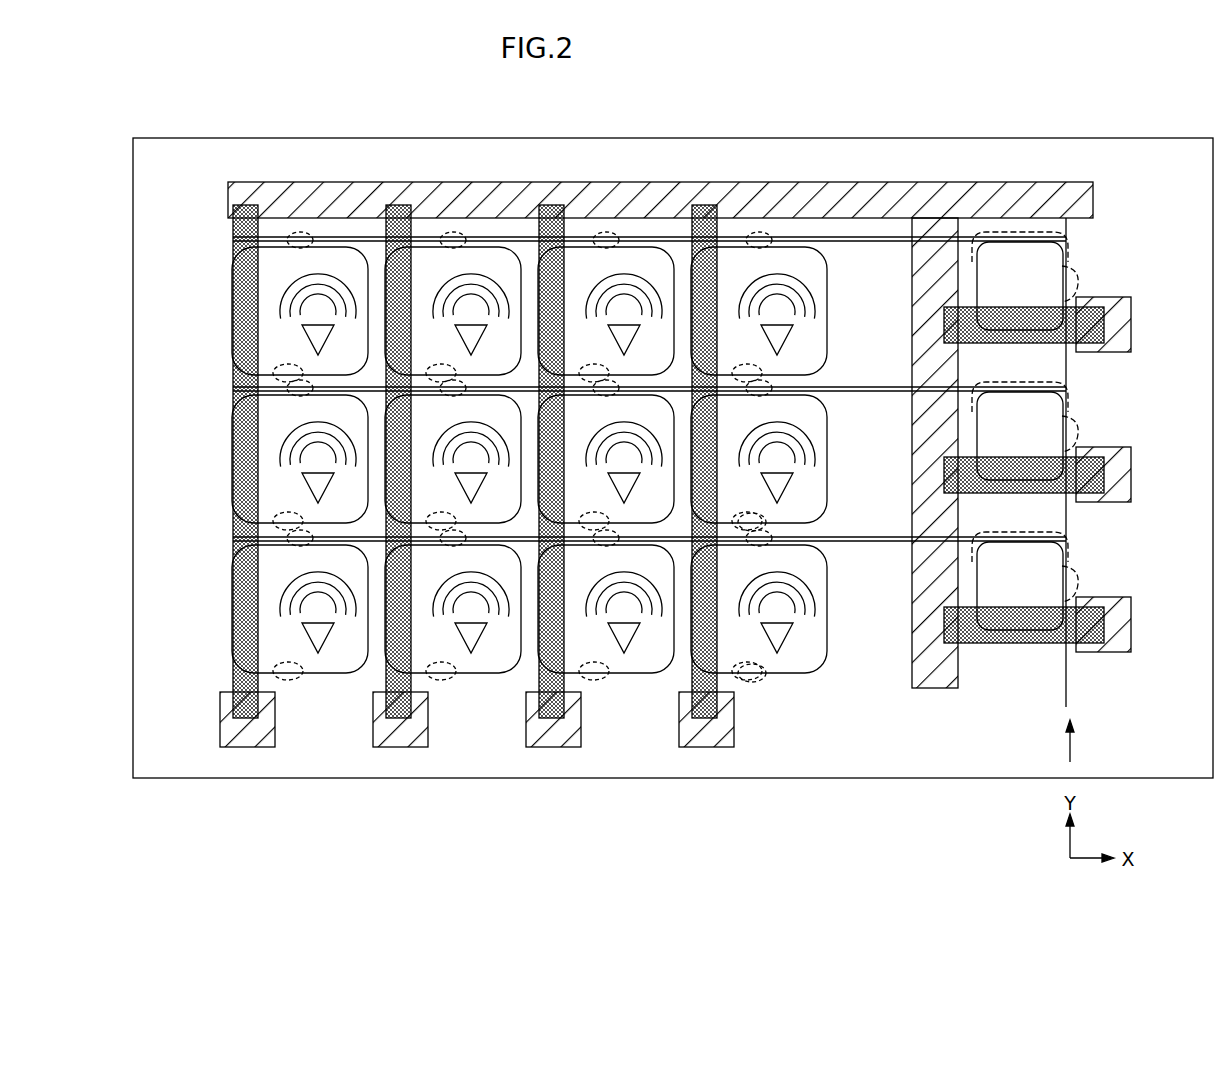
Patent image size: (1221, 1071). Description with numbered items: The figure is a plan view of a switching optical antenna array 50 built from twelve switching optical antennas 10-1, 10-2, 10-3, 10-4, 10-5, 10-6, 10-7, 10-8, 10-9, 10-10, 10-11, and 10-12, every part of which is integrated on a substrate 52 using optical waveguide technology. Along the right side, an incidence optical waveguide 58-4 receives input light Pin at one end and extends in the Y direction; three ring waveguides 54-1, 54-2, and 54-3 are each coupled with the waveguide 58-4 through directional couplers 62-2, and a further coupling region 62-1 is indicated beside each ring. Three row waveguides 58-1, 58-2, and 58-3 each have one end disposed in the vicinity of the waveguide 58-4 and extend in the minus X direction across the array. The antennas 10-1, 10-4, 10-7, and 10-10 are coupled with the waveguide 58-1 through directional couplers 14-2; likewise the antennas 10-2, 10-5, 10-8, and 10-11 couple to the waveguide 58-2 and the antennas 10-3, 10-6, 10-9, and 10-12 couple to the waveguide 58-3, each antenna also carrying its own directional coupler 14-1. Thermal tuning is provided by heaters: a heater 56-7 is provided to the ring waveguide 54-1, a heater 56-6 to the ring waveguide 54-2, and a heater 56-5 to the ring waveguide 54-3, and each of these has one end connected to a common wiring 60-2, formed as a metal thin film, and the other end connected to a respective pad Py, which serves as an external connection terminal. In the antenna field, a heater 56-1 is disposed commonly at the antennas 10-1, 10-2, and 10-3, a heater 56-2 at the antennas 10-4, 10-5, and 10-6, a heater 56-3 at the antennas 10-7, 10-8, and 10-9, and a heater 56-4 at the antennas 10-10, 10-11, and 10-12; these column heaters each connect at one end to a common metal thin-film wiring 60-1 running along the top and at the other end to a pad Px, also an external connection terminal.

The switching optical antenna array 50 is at (690, 125).
The substrate 52 is at (757, 779).
The switching optical antenna 10-1 is at (300, 307).
The switching optical antenna 10-2 is at (300, 455).
The switching optical antenna 10-3 is at (300, 605).
The switching optical antenna 10-4 is at (453, 307).
The switching optical antenna 10-5 is at (453, 455).
The switching optical antenna 10-6 is at (453, 605).
The switching optical antenna 10-7 is at (606, 307).
The switching optical antenna 10-8 is at (606, 455).
The switching optical antenna 10-9 is at (606, 605).
The switching optical antenna 10-10 is at (759, 307).
The switching optical antenna 10-11 is at (759, 455).
The switching optical antenna 10-12 is at (759, 605).
The directional coupler 14-1 is at (752, 682).
The directional coupler 14-2 is at (752, 528).
The ring waveguide 54-1 is at (1020, 286).
The ring waveguide 54-2 is at (1020, 436).
The ring waveguide 54-3 is at (1020, 586).
The heater 56-1 is at (237, 683).
The heater 56-2 is at (390, 683).
The heater 56-3 is at (543, 683).
The heater 56-4 is at (696, 683).
The heater 56-5 is at (1018, 644).
The heater 56-6 is at (990, 494).
The heater 56-7 is at (990, 344).
The waveguide 58-1 is at (862, 241).
The waveguide 58-2 is at (862, 391).
The waveguide 58-3 is at (862, 541).
The waveguide 58-4 is at (1068, 690).
The wiring 60-1 is at (902, 183).
The wiring 60-2 is at (935, 688).
The dashed region 62-1 is at (1068, 236).
The directional coupler 62-2 is at (1078, 284).
The pad Px is at (222, 727).
The pad Py is at (1132, 326).
The input light Pin is at (1087, 741).